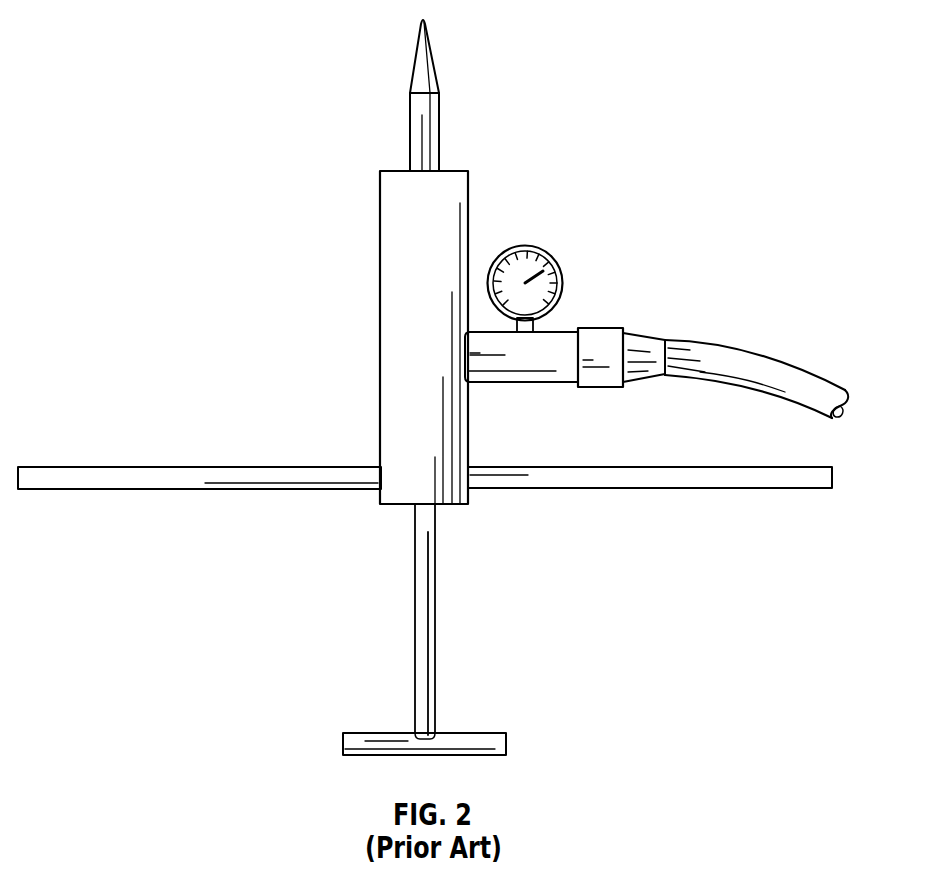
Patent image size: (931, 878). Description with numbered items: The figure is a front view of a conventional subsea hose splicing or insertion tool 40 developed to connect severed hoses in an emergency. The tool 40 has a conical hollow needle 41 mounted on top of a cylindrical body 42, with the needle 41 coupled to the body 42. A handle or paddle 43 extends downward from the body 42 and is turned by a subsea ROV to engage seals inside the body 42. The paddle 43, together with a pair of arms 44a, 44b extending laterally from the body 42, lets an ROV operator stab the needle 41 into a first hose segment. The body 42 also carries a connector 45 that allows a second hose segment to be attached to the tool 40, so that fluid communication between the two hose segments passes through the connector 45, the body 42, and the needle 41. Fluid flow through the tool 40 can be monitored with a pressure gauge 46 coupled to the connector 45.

The hose splicing or insertion tool 40 is at (240, 104).
The conical hollow needle 41 is at (439, 133).
The cylindrical body 42 is at (380, 218).
The handle or paddle 43 is at (378, 732).
The arm 44a is at (650, 465).
The arm 44b is at (200, 466).
The connector 45 is at (600, 328).
The pressure gauge 46 is at (527, 247).